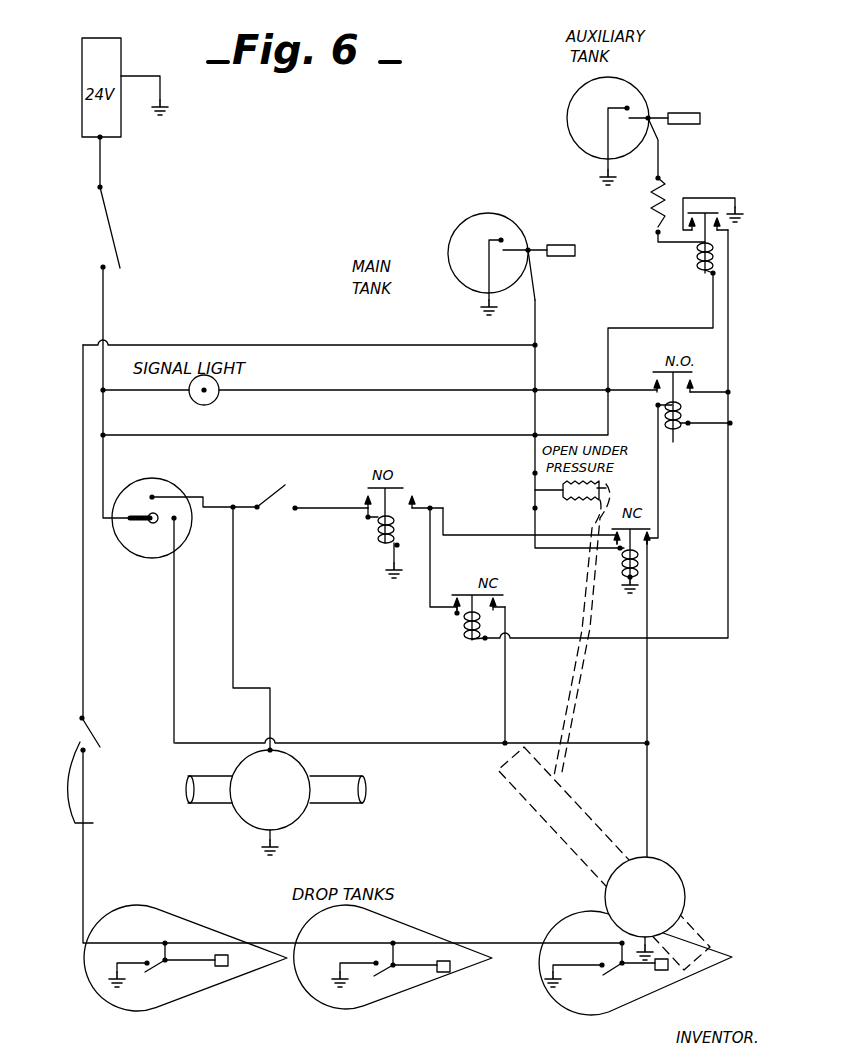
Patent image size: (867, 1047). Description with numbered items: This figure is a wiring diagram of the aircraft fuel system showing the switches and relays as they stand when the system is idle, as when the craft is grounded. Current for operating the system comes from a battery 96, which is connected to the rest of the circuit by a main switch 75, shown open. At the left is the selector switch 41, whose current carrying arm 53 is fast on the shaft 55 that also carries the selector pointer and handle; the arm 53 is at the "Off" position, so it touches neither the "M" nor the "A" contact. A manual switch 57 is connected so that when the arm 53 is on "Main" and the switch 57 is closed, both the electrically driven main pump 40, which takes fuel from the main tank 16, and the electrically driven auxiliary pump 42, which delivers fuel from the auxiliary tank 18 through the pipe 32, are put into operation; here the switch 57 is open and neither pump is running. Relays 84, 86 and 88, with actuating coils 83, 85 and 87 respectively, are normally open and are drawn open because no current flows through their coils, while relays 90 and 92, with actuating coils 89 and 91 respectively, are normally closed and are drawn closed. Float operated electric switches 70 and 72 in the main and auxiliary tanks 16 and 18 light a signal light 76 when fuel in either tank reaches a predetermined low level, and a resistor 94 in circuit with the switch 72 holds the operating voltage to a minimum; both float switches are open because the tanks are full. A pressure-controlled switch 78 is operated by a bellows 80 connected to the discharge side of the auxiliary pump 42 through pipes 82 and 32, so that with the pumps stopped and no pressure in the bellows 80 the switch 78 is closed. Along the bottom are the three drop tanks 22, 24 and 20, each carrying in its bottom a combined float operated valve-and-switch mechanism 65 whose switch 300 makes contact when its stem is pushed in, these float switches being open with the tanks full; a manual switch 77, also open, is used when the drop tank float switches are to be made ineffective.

The battery 96 is at (112, 140).
The main switch 75 is at (108, 253).
The signal light 76 is at (205, 405).
The current carrying arm 53 is at (133, 500).
The shaft 55 is at (150, 525).
The selector switch 41 is at (181, 552).
The manual switch 57 is at (288, 505).
The relay 84 is at (410, 494).
The actuating coil 83 is at (378, 530).
The relay 90 is at (455, 590).
The actuating coil 89 is at (465, 632).
The switch 78 is at (528, 485).
The bellows 80 is at (568, 506).
The pipe 82 is at (575, 603).
The relay 92 is at (640, 540).
The actuating coil 91 is at (625, 560).
The relay 86 is at (655, 383).
The actuating coil 85 is at (682, 420).
The relay 88 is at (722, 220).
The actuating coil 87 is at (697, 252).
The resistor 94 is at (655, 208).
The float operated electric switch 72 is at (628, 125).
The auxiliary tank 18 is at (577, 148).
The float operated electric switch 70 is at (510, 246).
The main tank 16 is at (447, 303).
The manual switch 77 is at (96, 751).
The main pump 40 is at (296, 820).
The drop tank 22 is at (222, 922).
The drop tank 24 is at (437, 931).
The drop tank 20 is at (571, 922).
The float operated valve-and-switch mechanism 65 is at (167, 959).
The switch 300 is at (150, 966).
The pipe 32 is at (577, 797).
The auxiliary pump 42 is at (677, 874).